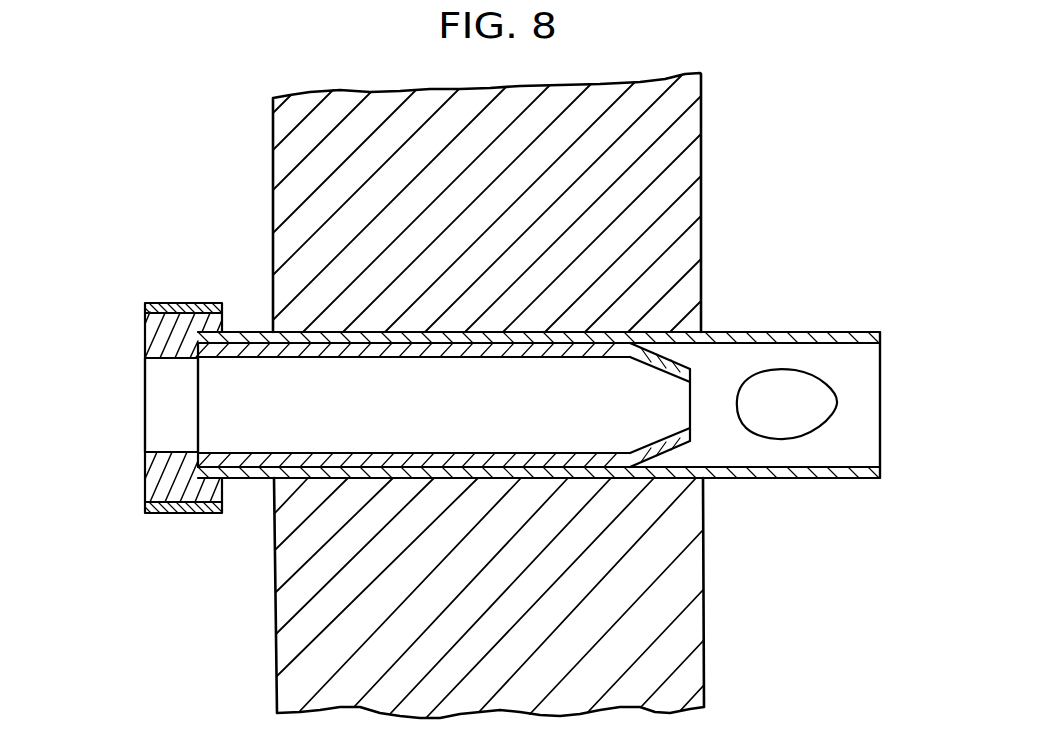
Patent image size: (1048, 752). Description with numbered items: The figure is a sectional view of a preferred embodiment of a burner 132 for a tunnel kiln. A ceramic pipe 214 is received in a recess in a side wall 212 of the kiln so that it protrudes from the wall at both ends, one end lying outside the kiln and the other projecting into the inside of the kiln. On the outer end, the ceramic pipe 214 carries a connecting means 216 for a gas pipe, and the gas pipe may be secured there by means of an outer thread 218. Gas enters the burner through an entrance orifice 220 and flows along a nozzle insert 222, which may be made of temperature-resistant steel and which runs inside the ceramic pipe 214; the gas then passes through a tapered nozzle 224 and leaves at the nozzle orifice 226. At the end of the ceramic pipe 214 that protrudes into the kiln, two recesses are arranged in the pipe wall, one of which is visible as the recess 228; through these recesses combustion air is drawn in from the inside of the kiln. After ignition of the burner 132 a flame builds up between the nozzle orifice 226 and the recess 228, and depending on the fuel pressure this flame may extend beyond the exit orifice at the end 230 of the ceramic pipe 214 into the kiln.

The burner 132 is at (900, 253).
The side wall 212 is at (273, 137).
The ceramic pipe 214 is at (793, 332).
The connecting means 216 is at (160, 343).
The outer thread 218 is at (180, 303).
The entrance orifice 220 is at (150, 437).
The nozzle insert 222 is at (252, 463).
The tapered nozzle 224 is at (668, 452).
The nozzle orifice 226 is at (693, 410).
The recess 228 is at (815, 425).
The outer tube end wall 230 is at (880, 390).